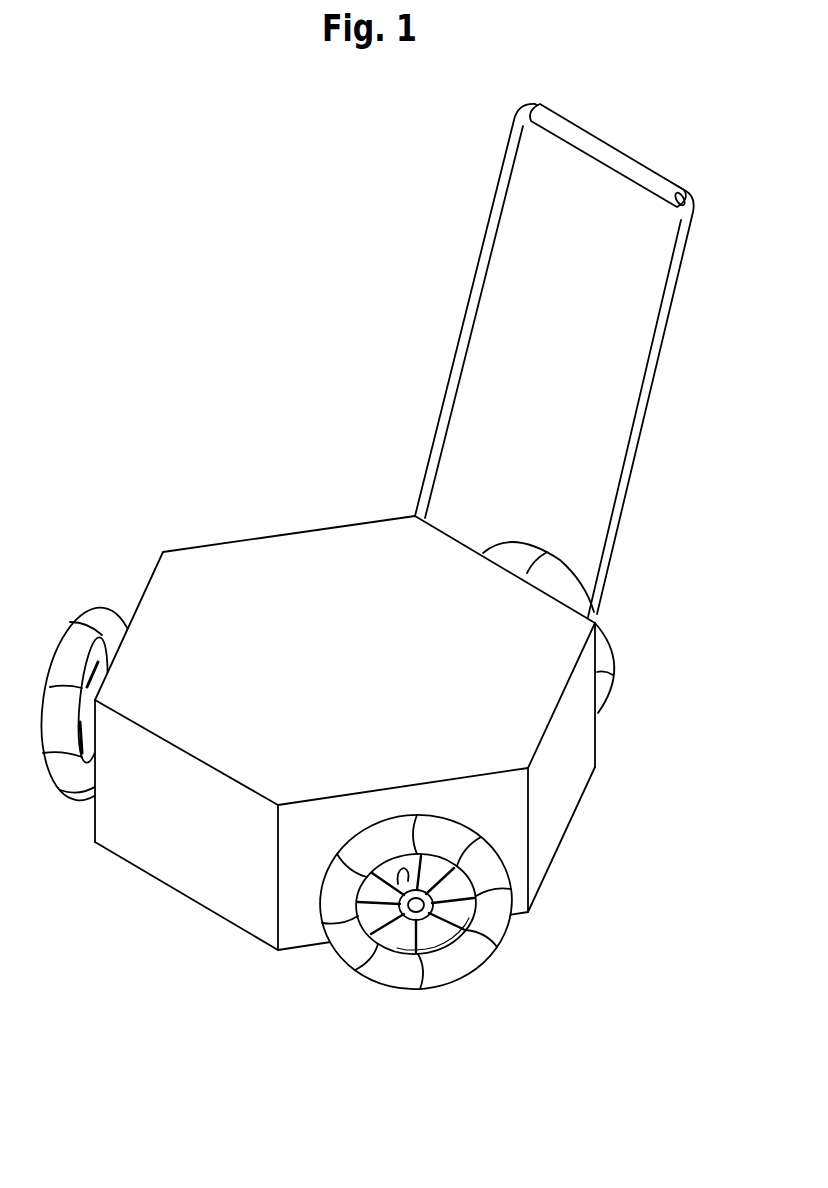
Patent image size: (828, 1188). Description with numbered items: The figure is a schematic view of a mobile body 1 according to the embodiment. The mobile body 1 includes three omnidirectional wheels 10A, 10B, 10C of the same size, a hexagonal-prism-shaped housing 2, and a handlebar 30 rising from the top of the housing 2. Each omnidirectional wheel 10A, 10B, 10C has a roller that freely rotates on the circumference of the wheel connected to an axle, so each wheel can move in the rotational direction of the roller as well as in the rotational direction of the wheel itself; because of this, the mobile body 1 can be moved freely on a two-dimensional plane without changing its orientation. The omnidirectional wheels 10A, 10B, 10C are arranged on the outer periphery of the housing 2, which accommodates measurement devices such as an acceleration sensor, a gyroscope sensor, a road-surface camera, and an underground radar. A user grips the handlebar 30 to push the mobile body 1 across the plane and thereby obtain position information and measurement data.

The mobile body 1 is at (229, 194).
The body (hexagonal housing) 2 is at (295, 538).
The handlebar 30 is at (606, 152).
The omnidirectional wheel 10A is at (93, 607).
The omnidirectional wheel 10B is at (442, 968).
The omnidirectional wheel 10C is at (607, 640).